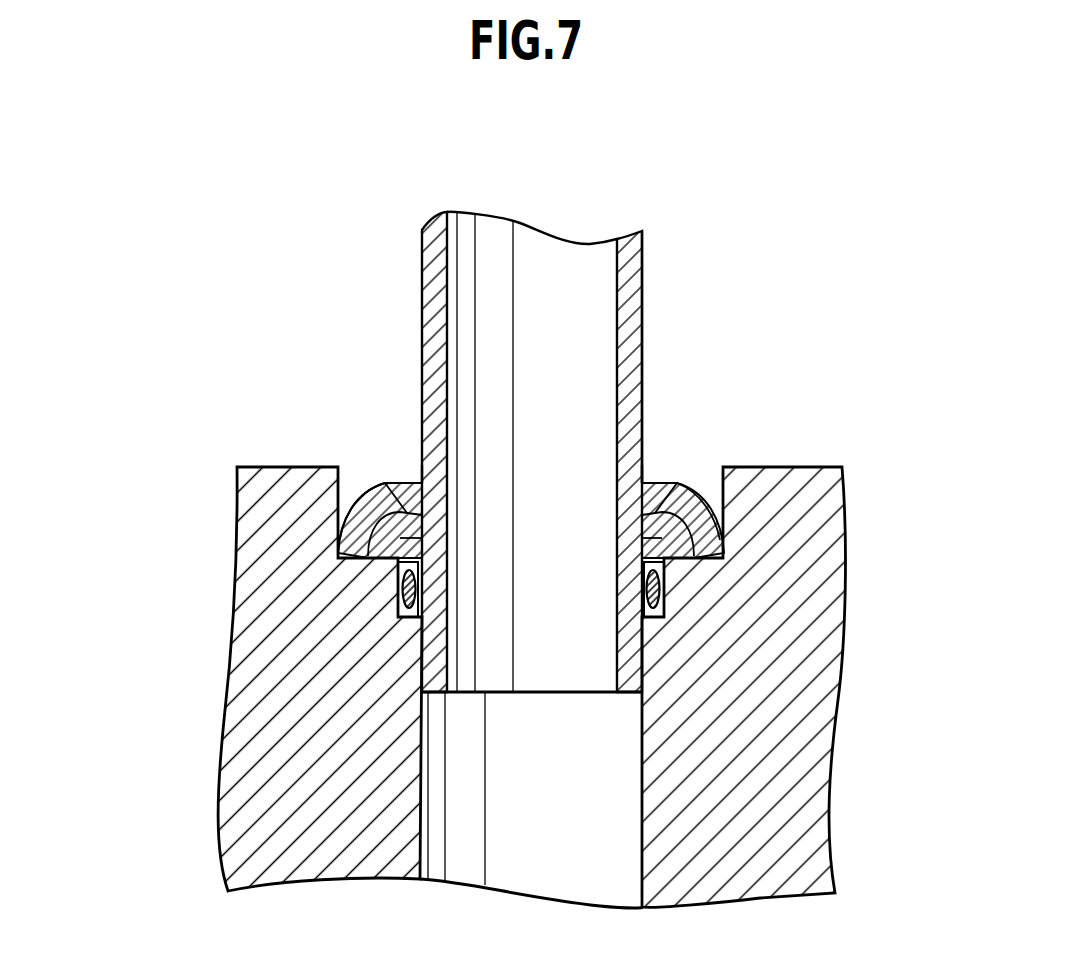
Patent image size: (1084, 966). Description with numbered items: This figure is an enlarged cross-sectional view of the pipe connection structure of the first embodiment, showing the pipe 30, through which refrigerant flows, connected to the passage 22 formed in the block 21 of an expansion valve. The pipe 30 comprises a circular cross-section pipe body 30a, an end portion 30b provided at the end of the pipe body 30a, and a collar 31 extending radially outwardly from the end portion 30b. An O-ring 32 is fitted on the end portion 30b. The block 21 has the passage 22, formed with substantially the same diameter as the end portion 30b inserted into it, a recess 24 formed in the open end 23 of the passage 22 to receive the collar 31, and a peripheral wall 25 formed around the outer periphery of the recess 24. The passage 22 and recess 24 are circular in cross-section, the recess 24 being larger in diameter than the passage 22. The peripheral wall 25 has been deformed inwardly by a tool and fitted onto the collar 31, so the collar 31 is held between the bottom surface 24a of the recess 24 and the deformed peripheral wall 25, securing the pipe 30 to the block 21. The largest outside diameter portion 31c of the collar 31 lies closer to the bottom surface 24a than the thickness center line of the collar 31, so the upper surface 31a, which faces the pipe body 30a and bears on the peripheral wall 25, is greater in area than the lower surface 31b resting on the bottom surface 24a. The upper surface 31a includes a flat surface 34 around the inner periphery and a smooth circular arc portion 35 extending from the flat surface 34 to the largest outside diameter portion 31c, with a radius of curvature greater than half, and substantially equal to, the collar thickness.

The block 21 is at (762, 813).
The passage 22 is at (600, 837).
The open end 23 is at (650, 492).
The recess 24 is at (684, 534).
The bottom surface 24a is at (676, 552).
The peripheral wall 25 is at (380, 482).
The pipe 30 is at (641, 232).
The pipe body 30a is at (642, 313).
The end portion 30b is at (646, 692).
The collar 31 is at (678, 592).
The upper surface 31a is at (128, 421).
The lower surface 31b is at (402, 578).
The largest outside diameter portion 31c is at (397, 553).
The O-ring 32 is at (403, 598).
The flat surface 34 is at (378, 488).
The circular arc portion 35 is at (365, 517).